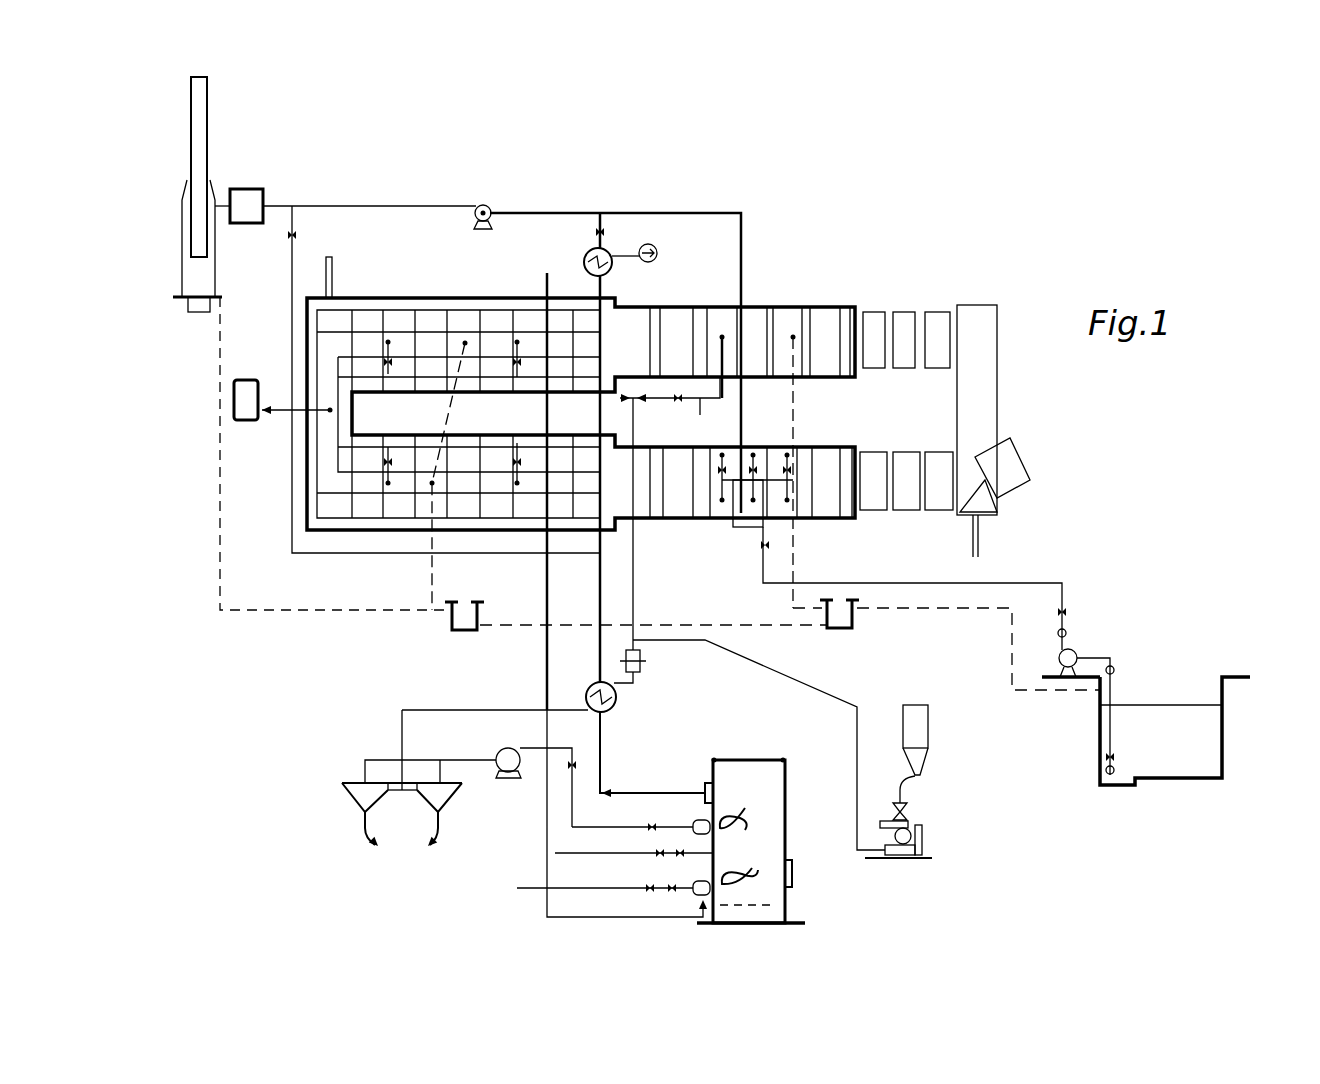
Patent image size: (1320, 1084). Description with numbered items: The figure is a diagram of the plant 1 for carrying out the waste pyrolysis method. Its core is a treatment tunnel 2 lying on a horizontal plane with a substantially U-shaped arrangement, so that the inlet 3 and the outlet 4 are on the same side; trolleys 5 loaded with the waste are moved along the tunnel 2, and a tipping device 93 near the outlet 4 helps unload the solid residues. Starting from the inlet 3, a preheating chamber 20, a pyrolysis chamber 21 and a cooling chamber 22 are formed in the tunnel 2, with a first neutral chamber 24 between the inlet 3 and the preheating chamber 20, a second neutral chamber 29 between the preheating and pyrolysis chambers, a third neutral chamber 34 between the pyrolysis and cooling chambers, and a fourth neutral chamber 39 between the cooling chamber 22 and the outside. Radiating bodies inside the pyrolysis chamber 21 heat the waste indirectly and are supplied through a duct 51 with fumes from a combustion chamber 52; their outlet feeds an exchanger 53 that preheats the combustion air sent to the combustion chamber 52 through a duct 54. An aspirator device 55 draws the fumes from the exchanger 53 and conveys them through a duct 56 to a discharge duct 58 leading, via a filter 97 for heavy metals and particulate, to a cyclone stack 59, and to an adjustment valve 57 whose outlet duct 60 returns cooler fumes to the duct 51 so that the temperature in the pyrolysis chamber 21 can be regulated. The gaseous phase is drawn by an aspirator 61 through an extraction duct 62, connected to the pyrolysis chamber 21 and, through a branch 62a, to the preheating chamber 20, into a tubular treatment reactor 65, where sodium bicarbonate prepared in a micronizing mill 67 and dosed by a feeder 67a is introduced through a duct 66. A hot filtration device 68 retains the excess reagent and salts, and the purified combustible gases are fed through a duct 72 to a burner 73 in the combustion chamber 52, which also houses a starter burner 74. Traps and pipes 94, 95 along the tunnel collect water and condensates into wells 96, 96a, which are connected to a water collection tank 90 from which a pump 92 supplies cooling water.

The plant 1 is at (863, 262).
The treatment tunnel 2 is at (780, 300).
The inlet 3 is at (862, 306).
The outlet 4 is at (868, 438).
The trolleys 5 is at (880, 340).
The preheating chamber 20 is at (742, 275).
The pyrolysis chamber 21 is at (338, 318).
The cooling chamber 22 is at (757, 447).
The first neutral chamber 24 is at (832, 365).
The second neutral chamber 29 is at (673, 322).
The third neutral chamber 34 is at (690, 505).
The fourth neutral chamber 39 is at (829, 505).
The duct 51 is at (605, 765).
The combustion chamber 52 is at (776, 778).
The exchanger 53 is at (584, 257).
The duct 54 is at (547, 273).
The aspirator device 55 is at (487, 209).
The duct 56 is at (353, 205).
The adjustment valve 57 is at (292, 242).
The discharge duct 58 is at (267, 205).
The cyclone stack 59 is at (205, 135).
The outlet duct 60 is at (322, 555).
The aspirator 61 is at (503, 752).
The extraction duct 62 is at (636, 603).
The branch 62a is at (707, 433).
The tubular treatment reactor 65 is at (617, 703).
The duct 66 is at (784, 672).
The micronizing mill 67 is at (932, 840).
The feeder 67a is at (645, 670).
The hot filtration device 68 is at (357, 793).
The duct 72 is at (590, 838).
The burner 73 is at (742, 801).
The starter burner 74 is at (750, 863).
The water collection tank 90 is at (1212, 735).
The pump 92 is at (1075, 652).
The tipping device 93 is at (1015, 452).
The traps and pipes 94 is at (795, 465).
The traps and pipes 95 is at (465, 343).
The well 96 is at (470, 606).
The well 96a is at (855, 622).
The filter 97 is at (247, 192).